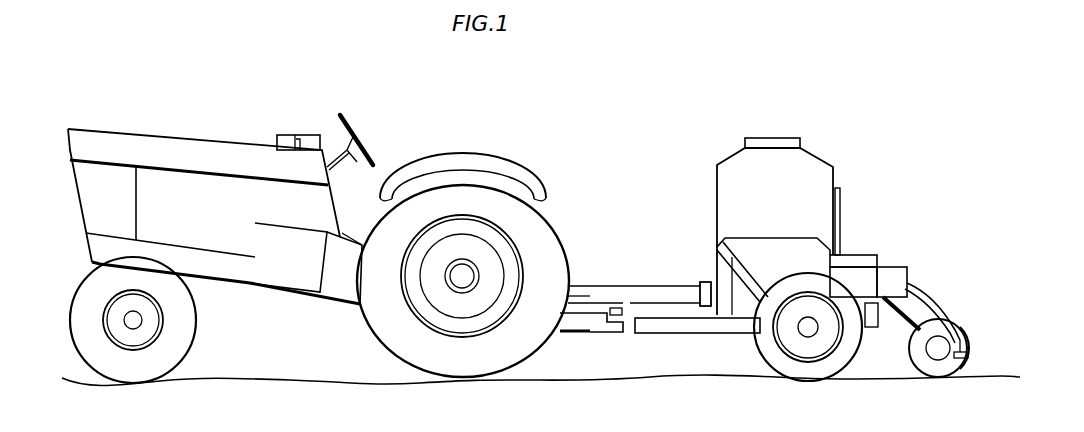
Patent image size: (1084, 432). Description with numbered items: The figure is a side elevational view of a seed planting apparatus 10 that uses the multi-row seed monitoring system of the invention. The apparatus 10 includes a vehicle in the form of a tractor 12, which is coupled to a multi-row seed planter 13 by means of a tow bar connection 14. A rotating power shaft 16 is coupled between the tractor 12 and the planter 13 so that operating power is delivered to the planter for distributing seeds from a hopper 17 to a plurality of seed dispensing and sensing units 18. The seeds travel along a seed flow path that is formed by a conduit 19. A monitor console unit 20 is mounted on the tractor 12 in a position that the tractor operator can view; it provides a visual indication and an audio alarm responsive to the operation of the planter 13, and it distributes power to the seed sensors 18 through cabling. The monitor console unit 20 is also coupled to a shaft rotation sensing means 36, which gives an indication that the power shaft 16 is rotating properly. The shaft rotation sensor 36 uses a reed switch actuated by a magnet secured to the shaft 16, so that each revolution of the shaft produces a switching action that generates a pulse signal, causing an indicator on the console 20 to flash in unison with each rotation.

The seed planting apparatus 10 is at (592, 131).
The tractor 12 is at (182, 147).
The multi-row seed planter 13 is at (845, 210).
The tow bar connection 14 is at (632, 327).
The rotating power shaft 16 is at (607, 292).
The hopper 17 is at (807, 167).
The seed dispensing and sensing units 18 is at (973, 321).
The conduit 19 is at (926, 290).
The monitor console unit 20 is at (290, 135).
The shaft rotation sensing means 36 is at (703, 282).